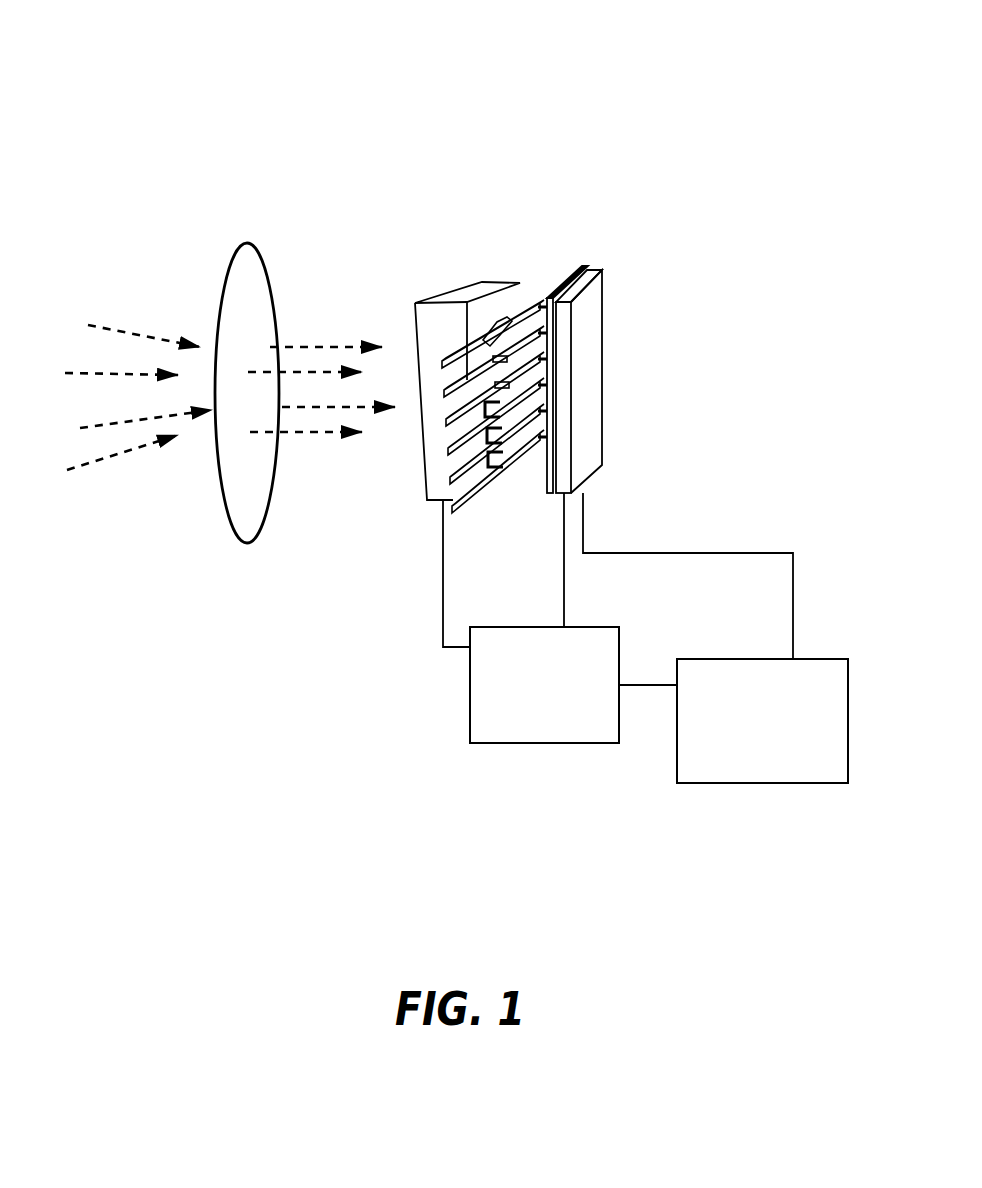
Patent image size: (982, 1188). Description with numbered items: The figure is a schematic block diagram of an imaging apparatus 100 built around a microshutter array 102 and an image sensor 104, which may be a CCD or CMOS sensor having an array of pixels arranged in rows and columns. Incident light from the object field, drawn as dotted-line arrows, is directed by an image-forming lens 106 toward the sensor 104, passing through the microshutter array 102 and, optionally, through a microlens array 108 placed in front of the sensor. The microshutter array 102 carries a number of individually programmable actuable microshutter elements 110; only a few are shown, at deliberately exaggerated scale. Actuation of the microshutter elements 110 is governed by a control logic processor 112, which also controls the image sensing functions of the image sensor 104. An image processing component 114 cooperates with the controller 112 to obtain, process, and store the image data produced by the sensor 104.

The imaging apparatus 100 is at (541, 86).
The microshutter array 102 is at (463, 287).
The image sensor 104 is at (603, 328).
The image-forming lens 106 is at (232, 528).
The microlens array 108 is at (551, 296).
The microshutter elements 110 is at (463, 508).
The control logic processor 112 is at (552, 745).
The image processing component 114 is at (778, 785).